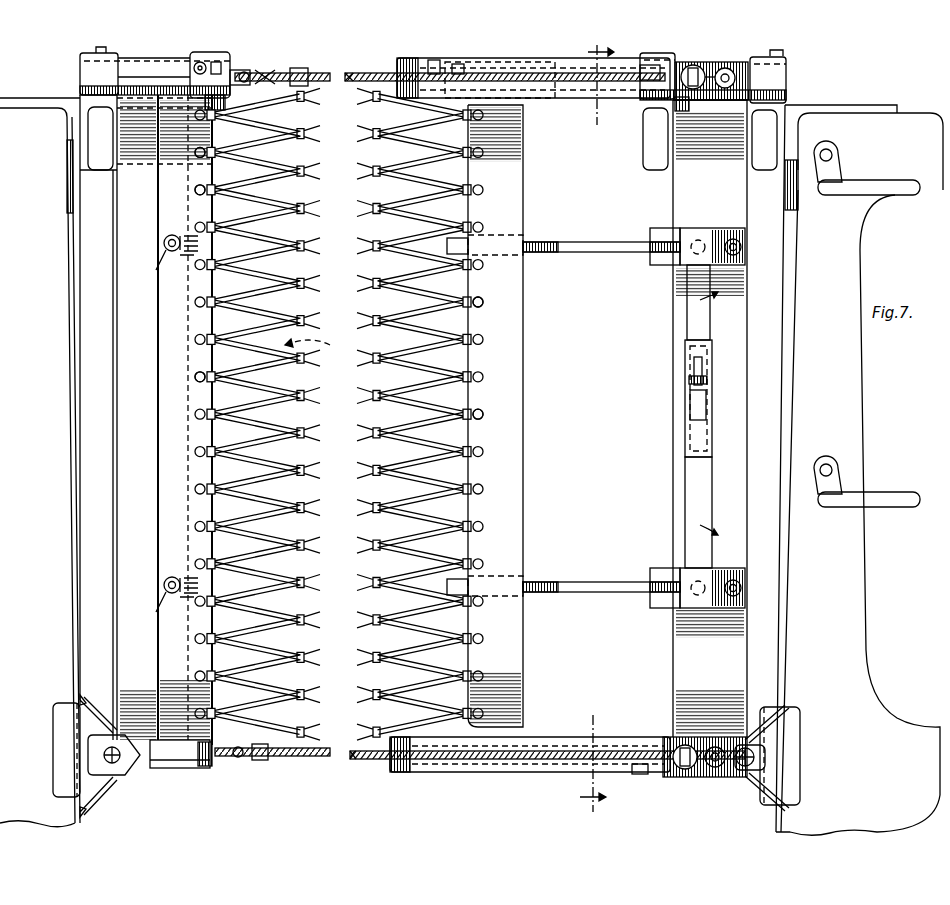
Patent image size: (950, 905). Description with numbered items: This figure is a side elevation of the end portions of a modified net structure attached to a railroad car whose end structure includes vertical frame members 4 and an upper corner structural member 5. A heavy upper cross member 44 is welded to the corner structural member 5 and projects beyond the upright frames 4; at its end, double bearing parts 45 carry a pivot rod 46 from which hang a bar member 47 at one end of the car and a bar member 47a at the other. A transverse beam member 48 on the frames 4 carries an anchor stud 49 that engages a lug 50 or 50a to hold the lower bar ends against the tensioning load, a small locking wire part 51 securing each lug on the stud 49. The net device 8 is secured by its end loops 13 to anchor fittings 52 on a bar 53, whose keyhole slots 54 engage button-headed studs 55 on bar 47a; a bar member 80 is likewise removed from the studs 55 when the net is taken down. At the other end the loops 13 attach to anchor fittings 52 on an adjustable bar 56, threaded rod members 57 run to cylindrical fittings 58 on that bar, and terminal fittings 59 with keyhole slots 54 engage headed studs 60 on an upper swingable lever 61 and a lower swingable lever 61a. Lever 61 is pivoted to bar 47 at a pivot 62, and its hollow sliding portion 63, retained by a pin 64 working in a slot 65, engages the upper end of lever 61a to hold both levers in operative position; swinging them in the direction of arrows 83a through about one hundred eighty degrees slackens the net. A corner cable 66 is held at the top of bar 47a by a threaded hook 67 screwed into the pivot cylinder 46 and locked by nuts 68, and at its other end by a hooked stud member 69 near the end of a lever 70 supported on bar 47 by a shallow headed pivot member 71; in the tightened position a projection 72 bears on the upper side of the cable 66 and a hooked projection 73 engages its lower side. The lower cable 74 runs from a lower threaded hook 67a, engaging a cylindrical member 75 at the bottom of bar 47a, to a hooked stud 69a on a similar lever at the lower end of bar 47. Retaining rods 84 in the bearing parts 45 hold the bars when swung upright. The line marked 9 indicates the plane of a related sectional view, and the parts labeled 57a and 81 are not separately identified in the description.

The vertical frame members 4 is at (858, 416).
The corner structural member 5 is at (22, 96).
The net device 8 is at (449, 198).
The section line 9- 9 is at (584, 763).
The end loops 13 is at (200, 302).
The upper cross member 44 is at (87, 108).
The double bearing parts 45 is at (188, 62).
The pivot rod 46 is at (232, 90).
The bar member 47 is at (748, 472).
The bar member 47a is at (120, 406).
The beam member 48 is at (95, 708).
The anchor stud 49 is at (104, 741).
The lug 50 is at (762, 766).
The lug 50a is at (89, 754).
The locking wire part 51 is at (141, 765).
The anchor fittings 52 is at (197, 192).
The bar 53 is at (154, 472).
The keyhole slots 54 is at (185, 268).
The button-headed studs 55 is at (164, 243).
The adjustable bar 56 is at (516, 435).
The threaded rod members 57 is at (570, 246).
The bolt head 57a is at (446, 256).
The cylindrical fittings 58 is at (501, 236).
The terminal fittings 59 is at (668, 265).
The headed studs 60 is at (742, 246).
The upper swingable lever 61 is at (712, 318).
The lower swingable lever 61a is at (686, 497).
The pivot 62 is at (698, 238).
The hollow sliding portion 63 is at (685, 419).
The pin 64 is at (706, 394).
The slot 65 is at (692, 370).
The corner cable 66 is at (593, 100).
The threaded hook 67 is at (267, 72).
The lower threaded hook 67a is at (234, 758).
The nuts 68 is at (226, 66).
The hooked stud member 69 is at (720, 90).
The hooked stud 69a is at (206, 766).
The lever 70 is at (560, 100).
The shallow headed pivot member 71 is at (700, 66).
The projection 72 is at (640, 66).
The projection 73 is at (398, 62).
The lower cable 74 is at (362, 760).
The cylindrical member 75 is at (170, 768).
The bar member 80 is at (204, 64).
The pin 81 is at (510, 80).
The arrows 83a is at (722, 415).
The retaining rods 84 is at (95, 52).